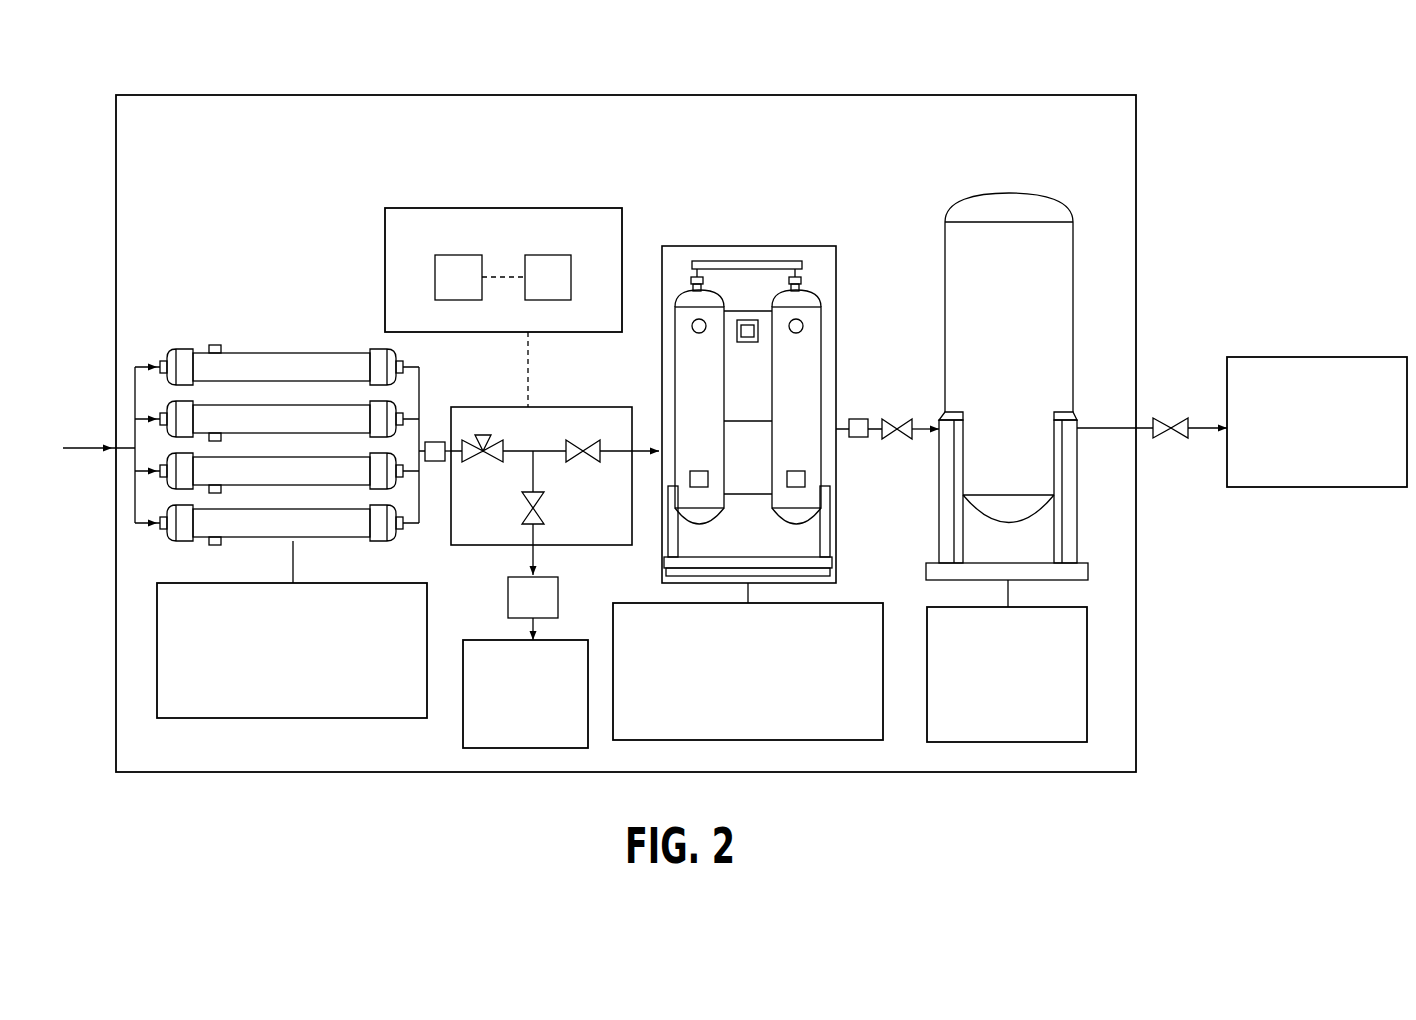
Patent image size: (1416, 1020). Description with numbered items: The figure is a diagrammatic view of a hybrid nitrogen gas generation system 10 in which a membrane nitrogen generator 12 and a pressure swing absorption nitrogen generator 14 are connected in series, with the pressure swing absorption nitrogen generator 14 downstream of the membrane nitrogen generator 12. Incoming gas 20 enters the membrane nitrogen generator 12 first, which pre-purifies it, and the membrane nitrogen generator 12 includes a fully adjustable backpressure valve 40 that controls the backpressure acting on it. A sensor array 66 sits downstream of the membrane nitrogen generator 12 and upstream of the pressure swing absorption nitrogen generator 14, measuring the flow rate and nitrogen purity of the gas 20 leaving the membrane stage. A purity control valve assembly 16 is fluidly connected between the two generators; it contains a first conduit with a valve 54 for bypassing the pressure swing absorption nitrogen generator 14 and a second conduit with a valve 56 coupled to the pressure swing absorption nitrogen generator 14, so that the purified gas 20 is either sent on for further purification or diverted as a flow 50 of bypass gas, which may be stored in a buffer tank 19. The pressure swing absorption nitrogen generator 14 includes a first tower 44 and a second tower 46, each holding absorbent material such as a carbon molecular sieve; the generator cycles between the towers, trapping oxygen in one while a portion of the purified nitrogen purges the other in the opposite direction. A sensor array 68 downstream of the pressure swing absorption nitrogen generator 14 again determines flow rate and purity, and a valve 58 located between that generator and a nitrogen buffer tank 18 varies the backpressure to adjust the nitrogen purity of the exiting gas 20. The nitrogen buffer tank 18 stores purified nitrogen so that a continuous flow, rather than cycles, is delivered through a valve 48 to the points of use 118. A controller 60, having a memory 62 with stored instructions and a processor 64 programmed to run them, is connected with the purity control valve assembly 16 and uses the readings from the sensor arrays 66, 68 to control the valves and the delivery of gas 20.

The hybrid nitrogen gas generation system 10 is at (305, 90).
The membrane nitrogen generator 12 is at (290, 718).
The pressure swing absorption nitrogen generator 14 is at (736, 478).
The purity control valve assembly 16 is at (550, 453).
The nitrogen buffer tank 18 is at (927, 668).
The buffer tank 19 is at (508, 605).
The gas 20 is at (80, 448).
The backpressure valve 40 is at (480, 430).
The first tower 44 is at (678, 300).
The second tower 46 is at (815, 350).
The valve 48 is at (1165, 438).
The flow of bypass gas 50 is at (517, 748).
The valve 54 is at (543, 511).
The valve 56 is at (583, 458).
The valve 58 is at (888, 418).
The controller 60 is at (481, 246).
The memory 62 is at (435, 277).
The processor 64 is at (571, 277).
The sensor array 66 is at (435, 462).
The sensor array 68 is at (858, 437).
The points of use 118 is at (1300, 357).